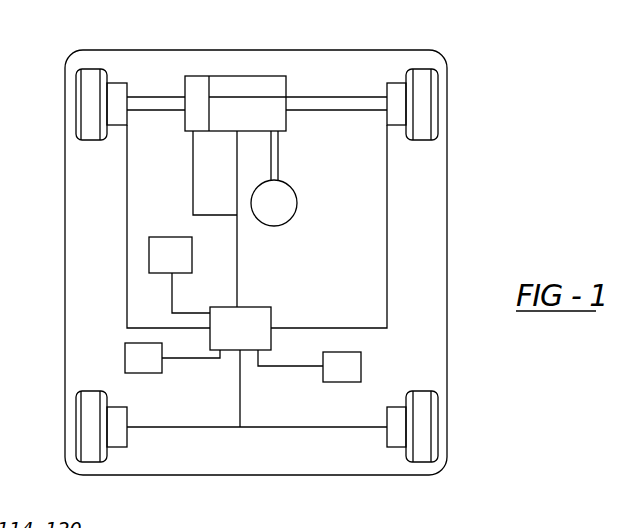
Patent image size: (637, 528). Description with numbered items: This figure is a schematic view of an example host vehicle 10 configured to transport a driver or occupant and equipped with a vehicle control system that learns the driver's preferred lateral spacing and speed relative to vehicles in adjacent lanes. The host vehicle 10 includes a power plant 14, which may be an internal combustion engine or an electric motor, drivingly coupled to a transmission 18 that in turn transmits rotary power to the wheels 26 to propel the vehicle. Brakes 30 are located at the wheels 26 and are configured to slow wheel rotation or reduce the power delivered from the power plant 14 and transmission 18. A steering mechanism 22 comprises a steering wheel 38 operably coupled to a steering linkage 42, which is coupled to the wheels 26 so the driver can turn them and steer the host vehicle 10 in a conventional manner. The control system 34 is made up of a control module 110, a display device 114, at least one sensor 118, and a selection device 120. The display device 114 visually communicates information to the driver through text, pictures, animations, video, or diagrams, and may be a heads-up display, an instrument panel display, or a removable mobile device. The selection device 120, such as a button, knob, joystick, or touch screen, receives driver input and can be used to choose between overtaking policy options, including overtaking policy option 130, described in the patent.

The host vehicle 10 is at (492, 62).
The power plant 14 is at (233, 83).
The transmission 18 is at (195, 85).
The steering mechanism 22 is at (305, 88).
The wheels 26 is at (88, 102).
The brakes 30 is at (113, 83).
The control system 34 is at (120, 334).
The steering wheel 38 is at (295, 216).
The steering linkage 42 is at (273, 123).
The control module 110 is at (260, 306).
The display device 114 is at (176, 238).
The sensor 118 is at (361, 366).
The selection device 120 is at (125, 358).
The overtaking policy option 130 is at (480, 527).